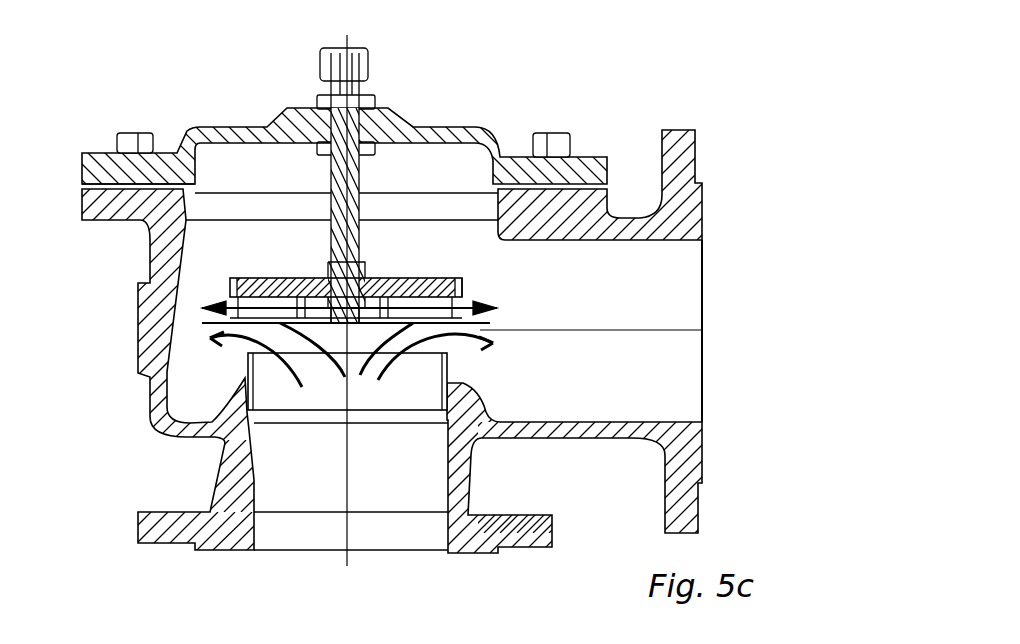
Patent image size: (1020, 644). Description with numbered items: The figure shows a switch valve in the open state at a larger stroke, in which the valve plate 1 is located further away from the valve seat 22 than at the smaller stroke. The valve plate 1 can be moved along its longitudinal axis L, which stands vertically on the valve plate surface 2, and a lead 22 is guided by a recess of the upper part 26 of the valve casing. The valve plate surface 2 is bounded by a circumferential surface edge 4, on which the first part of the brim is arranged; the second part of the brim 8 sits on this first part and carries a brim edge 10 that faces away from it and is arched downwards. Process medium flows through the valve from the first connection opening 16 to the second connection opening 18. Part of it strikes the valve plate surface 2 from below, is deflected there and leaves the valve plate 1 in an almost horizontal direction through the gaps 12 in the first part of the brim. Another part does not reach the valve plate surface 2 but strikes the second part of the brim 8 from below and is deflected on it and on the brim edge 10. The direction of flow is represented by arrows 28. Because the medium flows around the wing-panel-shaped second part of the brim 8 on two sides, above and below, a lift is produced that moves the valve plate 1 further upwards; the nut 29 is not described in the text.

The valve plate 1 is at (452, 259).
The valve plate surface 2 is at (288, 277).
The circumferential surface edge 4 is at (466, 286).
The second part of the brim 8 is at (224, 312).
The brim edge 10 is at (203, 319).
The gaps 12 is at (365, 308).
The first connection opening 16 is at (315, 542).
The second connection opening 18 is at (697, 352).
The valve seat 22 is at (247, 368).
The upper part of the valve casing 26 is at (296, 107).
The arrows 28 is at (317, 379).
The nut 29 is at (384, 109).
The longitudinal axis L is at (347, 40).